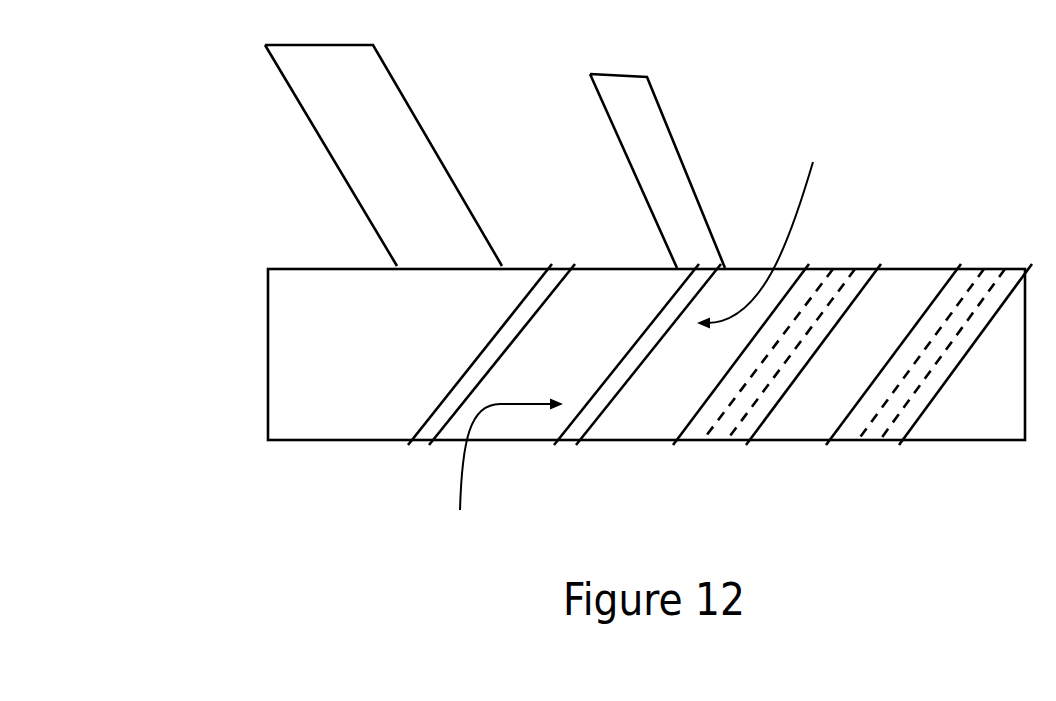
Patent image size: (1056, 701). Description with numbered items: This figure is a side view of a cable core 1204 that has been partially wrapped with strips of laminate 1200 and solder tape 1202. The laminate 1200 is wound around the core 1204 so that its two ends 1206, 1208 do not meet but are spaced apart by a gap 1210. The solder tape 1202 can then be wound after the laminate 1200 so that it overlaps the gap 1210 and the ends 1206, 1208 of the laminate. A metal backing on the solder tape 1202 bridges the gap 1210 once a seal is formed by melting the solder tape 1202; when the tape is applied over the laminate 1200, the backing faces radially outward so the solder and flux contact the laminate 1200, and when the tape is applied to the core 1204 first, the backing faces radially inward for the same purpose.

The laminate 1200 is at (352, 143).
The solder tape 1202 is at (648, 152).
The cable core 1204 is at (353, 420).
The end of the laminate 1206 is at (500, 470).
The end of the laminate 1208 is at (767, 230).
The gap 1210 is at (618, 383).